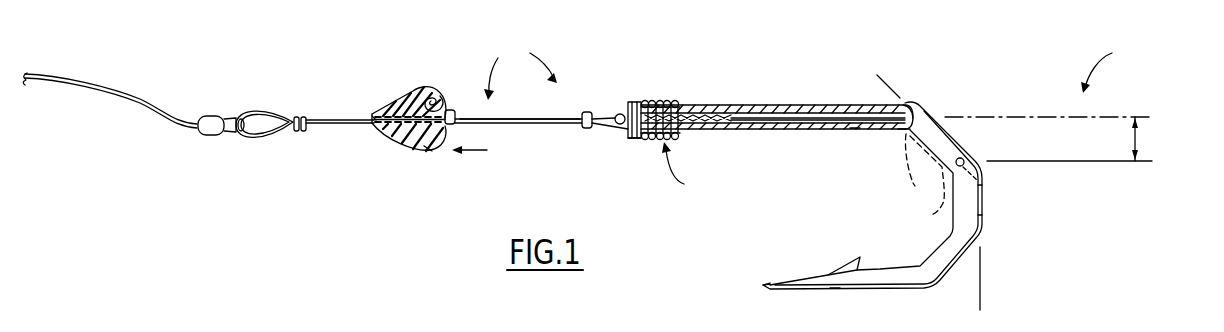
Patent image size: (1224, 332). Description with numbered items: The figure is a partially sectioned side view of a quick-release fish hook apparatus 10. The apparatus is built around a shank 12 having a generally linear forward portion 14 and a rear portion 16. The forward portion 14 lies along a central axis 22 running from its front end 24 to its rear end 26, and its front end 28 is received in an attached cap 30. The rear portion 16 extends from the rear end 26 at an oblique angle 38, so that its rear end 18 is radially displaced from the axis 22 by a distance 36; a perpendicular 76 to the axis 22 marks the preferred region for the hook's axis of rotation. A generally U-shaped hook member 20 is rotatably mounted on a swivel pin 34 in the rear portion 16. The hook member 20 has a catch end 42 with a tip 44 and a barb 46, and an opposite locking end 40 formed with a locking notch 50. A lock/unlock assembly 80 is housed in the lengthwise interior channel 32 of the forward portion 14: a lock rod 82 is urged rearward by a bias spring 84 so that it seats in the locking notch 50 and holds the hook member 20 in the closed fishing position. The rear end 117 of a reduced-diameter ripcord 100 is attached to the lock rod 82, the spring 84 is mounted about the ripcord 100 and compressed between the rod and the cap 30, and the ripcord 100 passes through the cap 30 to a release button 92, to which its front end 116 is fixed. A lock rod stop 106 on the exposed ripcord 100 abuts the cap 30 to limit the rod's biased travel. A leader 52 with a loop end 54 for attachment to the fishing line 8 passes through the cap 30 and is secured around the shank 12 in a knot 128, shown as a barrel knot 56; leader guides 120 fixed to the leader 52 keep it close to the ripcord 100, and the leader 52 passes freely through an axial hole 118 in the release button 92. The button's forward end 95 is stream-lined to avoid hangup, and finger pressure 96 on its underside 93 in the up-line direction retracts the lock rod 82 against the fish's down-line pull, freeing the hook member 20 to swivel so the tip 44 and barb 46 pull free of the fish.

The fishing line 8 is at (110, 88).
The quick-release fish hook apparatus 10 is at (1108, 66).
The shank 12 is at (793, 118).
The forward portion 14 is at (846, 105).
The rear portion 16 is at (932, 214).
The rear end 18 is at (982, 195).
The hook member 20 is at (973, 216).
The central axis 22 is at (1143, 117).
The front end 24 is at (669, 150).
The rear end 26 is at (880, 132).
The front end 28 is at (908, 182).
The cap 30 is at (641, 139).
The interior channel 32 is at (804, 132).
The swivel pin 34 is at (965, 160).
The displacement distance 36 is at (1135, 140).
The oblique angle 38 is at (863, 97).
The locking end 40 is at (875, 200).
The catch end 42 is at (830, 291).
The tip 44 is at (764, 289).
The barb 46 is at (842, 272).
The locking notch 50 is at (913, 103).
The leader 52 is at (313, 136).
The loop end 54 is at (247, 110).
The barrel knot 56 is at (301, 112).
The perpendicular 76 is at (983, 280).
The lock/unlock assembly 80 is at (520, 70).
The lock rod 82 is at (856, 131).
The bias spring 84 is at (722, 130).
The release button 92 is at (385, 131).
The underside 93 is at (433, 151).
The forward end 95 is at (376, 128).
The finger pressure 96 is at (466, 152).
The ripcord 100 is at (536, 118).
The lock rod stop 106 is at (620, 112).
The front end 116 is at (428, 95).
The rear end 117 is at (737, 107).
The axial hole 118 is at (384, 116).
The leader guide 120 is at (450, 109).
The knot 128 is at (663, 102).